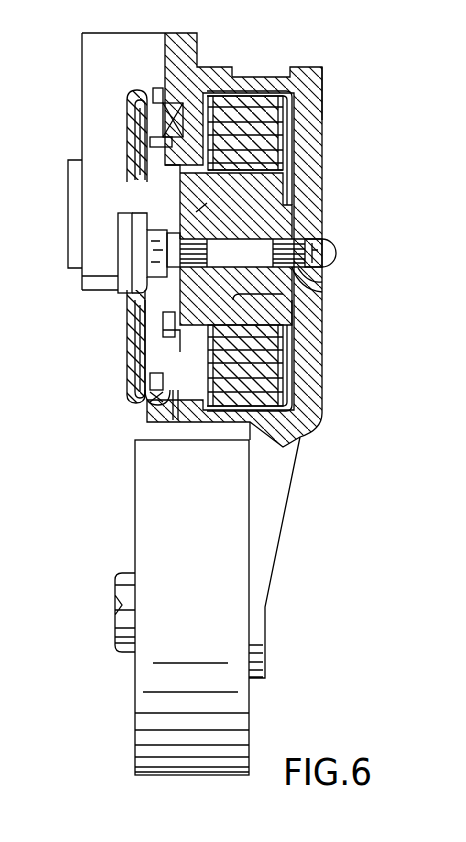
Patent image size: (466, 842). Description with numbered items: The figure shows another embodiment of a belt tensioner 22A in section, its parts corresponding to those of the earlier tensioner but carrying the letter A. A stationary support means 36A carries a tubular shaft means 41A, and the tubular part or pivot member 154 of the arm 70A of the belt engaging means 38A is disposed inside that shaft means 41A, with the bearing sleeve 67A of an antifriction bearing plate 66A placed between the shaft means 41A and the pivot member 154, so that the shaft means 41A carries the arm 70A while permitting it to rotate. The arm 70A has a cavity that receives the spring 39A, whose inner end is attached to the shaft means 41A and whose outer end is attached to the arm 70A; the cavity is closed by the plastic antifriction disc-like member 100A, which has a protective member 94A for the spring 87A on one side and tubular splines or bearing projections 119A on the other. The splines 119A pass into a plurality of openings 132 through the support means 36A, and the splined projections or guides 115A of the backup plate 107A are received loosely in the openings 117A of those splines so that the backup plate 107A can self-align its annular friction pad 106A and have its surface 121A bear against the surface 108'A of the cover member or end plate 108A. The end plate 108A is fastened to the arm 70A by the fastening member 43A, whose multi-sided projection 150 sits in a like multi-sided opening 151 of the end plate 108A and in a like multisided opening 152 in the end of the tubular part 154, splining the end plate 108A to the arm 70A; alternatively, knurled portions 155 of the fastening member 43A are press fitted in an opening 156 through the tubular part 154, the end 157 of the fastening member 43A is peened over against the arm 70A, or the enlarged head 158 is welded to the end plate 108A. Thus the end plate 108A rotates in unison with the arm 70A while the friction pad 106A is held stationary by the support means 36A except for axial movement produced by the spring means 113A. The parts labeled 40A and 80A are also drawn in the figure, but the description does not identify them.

The belt tensioner 22A is at (348, 89).
The support means 36A is at (82, 62).
The belt engaging means 38A is at (286, 532).
The spring 39A is at (293, 372).
The bracket 40A is at (153, 426).
The shaft means 41A is at (290, 197).
The fastening member 43A is at (248, 250).
The antifriction bearing plate 66A is at (293, 327).
The bearing sleeve 67A is at (293, 315).
The arm 70A is at (313, 138).
The spring stack 80A is at (150, 700).
The spring 87A is at (255, 97).
The protective member 94A is at (278, 173).
The disc-like member 100A is at (227, 97).
The annular friction pad 106A is at (125, 406).
The backup plate 107A is at (163, 334).
The end plate 108A is at (128, 167).
The surface of end plate 108'A is at (97, 346).
The spring means 113A is at (173, 400).
The splined projections 115A is at (160, 345).
The openings 117A is at (177, 350).
The tubular splines 119A is at (170, 73).
The surface of pad 121A is at (128, 108).
The openings 132 is at (148, 131).
The multi-sided projection 150 is at (147, 232).
The multi-sided opening 151 is at (118, 278).
The multisided opening 152 is at (263, 185).
The tubular part 154 is at (316, 292).
The knurled portions 155 is at (312, 280).
The opening 156 is at (332, 247).
The end of fastening member 157 is at (333, 261).
The enlarged head 158 is at (68, 205).